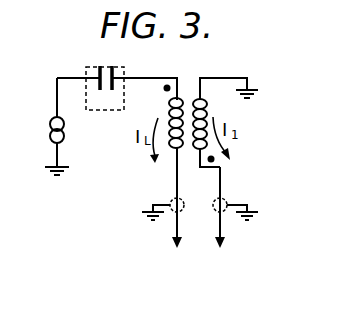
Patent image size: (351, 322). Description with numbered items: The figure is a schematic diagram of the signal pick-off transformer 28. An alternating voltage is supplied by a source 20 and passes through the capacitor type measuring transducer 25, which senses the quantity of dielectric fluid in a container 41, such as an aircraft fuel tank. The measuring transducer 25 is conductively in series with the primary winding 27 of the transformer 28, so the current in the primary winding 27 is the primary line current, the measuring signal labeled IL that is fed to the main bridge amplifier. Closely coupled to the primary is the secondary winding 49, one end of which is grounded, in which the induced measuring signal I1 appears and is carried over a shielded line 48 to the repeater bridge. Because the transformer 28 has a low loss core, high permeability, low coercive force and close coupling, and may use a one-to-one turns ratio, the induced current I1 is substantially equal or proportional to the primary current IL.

The source 20 is at (48, 130).
The capacitor type measuring transducer 25 is at (114, 67).
The container 41 is at (107, 111).
The pick-off transformer 28 is at (192, 80).
The secondary winding 49 is at (207, 103).
The primary winding 27 is at (174, 160).
The shielded line 48 is at (226, 188).